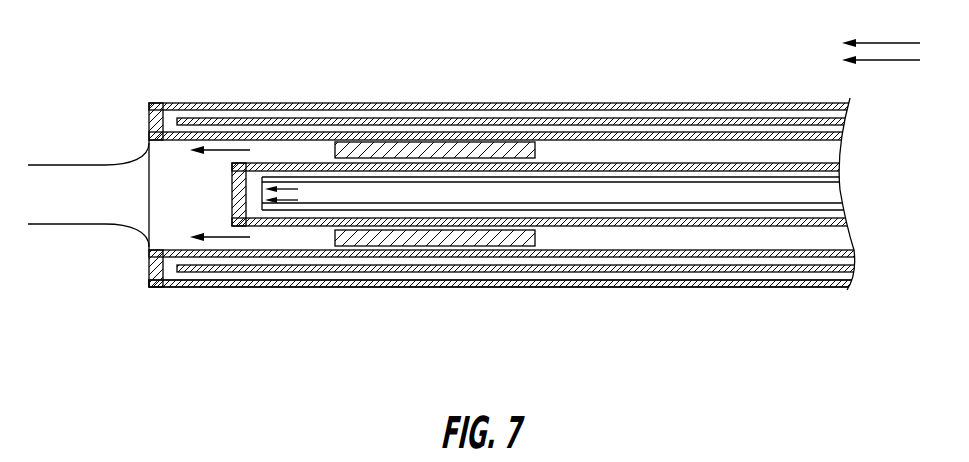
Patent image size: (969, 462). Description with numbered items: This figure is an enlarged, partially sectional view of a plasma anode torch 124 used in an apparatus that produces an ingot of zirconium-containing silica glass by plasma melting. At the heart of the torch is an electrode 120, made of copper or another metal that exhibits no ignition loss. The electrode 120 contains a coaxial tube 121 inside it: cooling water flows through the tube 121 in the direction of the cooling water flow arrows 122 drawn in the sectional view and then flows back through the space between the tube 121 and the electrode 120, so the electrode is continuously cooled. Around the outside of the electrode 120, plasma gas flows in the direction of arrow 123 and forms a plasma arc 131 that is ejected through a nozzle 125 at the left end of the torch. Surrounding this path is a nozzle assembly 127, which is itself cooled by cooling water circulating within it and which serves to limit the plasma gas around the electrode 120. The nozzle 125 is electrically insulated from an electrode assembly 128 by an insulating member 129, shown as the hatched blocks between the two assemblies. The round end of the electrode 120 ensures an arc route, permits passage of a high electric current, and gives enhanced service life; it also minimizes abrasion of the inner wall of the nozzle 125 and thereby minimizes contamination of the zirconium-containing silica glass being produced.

The electrode 120 is at (233, 228).
The coaxial tube 121 is at (845, 202).
The fluid flow path 122 is at (285, 188).
The arrow 123 is at (227, 152).
The plasma anode torch 124 is at (511, 88).
The nozzle 125 is at (149, 287).
The nozzle assembly 127 is at (727, 287).
The electrode assembly 128 is at (597, 227).
The insulating member 129 is at (505, 243).
The plasma arc 131 is at (107, 163).